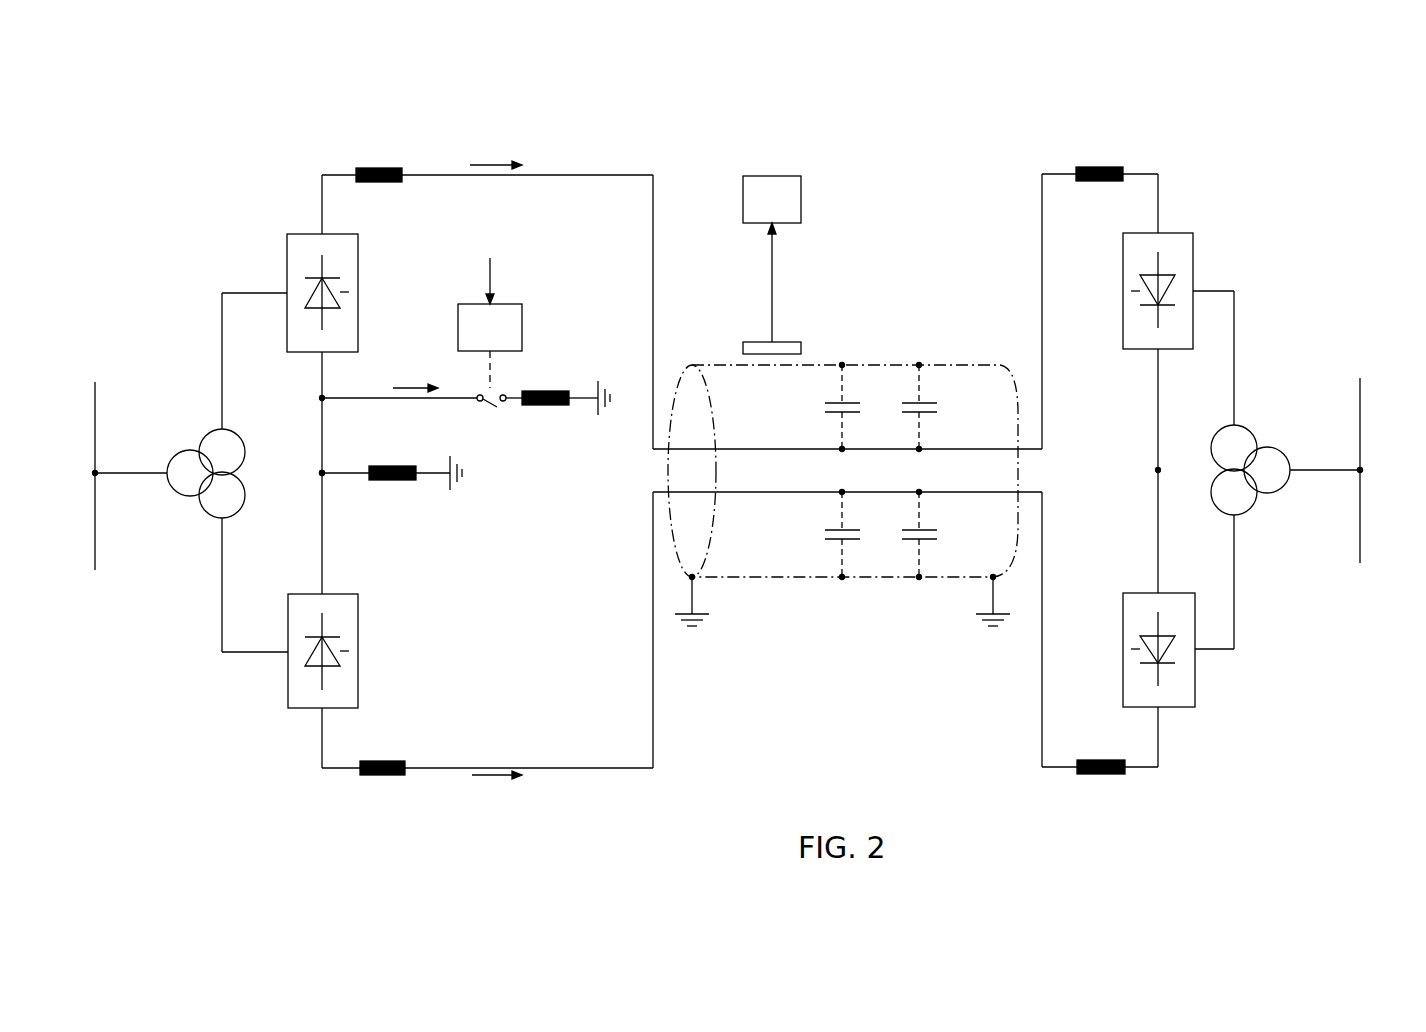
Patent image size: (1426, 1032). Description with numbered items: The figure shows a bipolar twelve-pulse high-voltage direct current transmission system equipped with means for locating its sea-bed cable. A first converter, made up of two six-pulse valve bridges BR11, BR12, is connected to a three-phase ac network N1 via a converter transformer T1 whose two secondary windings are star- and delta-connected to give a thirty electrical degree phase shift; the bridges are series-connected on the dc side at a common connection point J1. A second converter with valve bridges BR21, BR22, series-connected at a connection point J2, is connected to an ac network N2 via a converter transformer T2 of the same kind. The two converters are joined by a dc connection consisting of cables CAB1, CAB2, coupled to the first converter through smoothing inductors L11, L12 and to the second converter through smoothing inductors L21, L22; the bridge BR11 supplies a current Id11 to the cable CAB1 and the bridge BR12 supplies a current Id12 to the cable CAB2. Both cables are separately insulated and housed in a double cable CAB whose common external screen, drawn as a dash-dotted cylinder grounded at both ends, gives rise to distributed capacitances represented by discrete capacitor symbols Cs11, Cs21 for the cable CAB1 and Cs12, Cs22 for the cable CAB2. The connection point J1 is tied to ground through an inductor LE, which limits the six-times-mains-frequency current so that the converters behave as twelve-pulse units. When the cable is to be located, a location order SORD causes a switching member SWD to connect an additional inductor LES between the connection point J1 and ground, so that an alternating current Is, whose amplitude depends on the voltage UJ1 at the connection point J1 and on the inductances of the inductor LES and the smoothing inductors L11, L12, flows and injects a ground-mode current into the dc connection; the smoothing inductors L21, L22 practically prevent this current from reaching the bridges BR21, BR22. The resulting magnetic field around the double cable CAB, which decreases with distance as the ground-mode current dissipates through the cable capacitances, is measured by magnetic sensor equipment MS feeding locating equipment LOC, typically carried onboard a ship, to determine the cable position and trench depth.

The smoothing inductor L11 is at (380, 167).
The smoothing inductor L12 is at (384, 776).
The smoothing inductor L21 is at (1097, 167).
The smoothing inductor L22 is at (1100, 775).
The six-pulse valve bridge BR11 is at (287, 252).
The six-pulse valve bridge BR12 is at (288, 690).
The six-pulse valve bridge BR21 is at (1195, 250).
The six-pulse valve bridge BR22 is at (1195, 690).
The converter transformer T1 is at (193, 442).
The converter transformer T2 is at (1265, 442).
The three-phase electric ac network N1 is at (95, 525).
The three-phase electric ac network N2 is at (1362, 520).
The voltage at connection point J1 UJ1 is at (299, 473).
The connection point J1 is at (325, 478).
The connection point J2 is at (1163, 475).
The inductor LE is at (400, 482).
The inductor LES is at (547, 406).
The switching member SWD is at (525, 364).
The location order SORD is at (490, 290).
The current through inductor LES Is is at (399, 380).
The current Id11 is at (496, 154).
The current Id12 is at (497, 787).
The locating equipment LOC is at (752, 175).
The magnetic sensor equipment MS is at (757, 342).
The double cable CAB is at (785, 580).
The cable CAB1 is at (973, 445).
The cable CAB2 is at (975, 495).
The capacitor symbol Cs11 is at (852, 400).
The capacitor symbol Cs12 is at (852, 542).
The capacitor symbol Cs21 is at (910, 400).
The capacitor symbol Cs22 is at (910, 542).